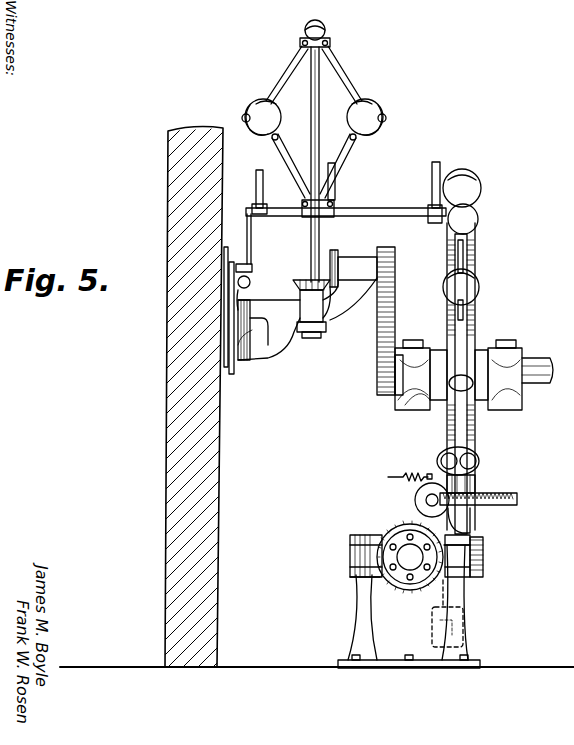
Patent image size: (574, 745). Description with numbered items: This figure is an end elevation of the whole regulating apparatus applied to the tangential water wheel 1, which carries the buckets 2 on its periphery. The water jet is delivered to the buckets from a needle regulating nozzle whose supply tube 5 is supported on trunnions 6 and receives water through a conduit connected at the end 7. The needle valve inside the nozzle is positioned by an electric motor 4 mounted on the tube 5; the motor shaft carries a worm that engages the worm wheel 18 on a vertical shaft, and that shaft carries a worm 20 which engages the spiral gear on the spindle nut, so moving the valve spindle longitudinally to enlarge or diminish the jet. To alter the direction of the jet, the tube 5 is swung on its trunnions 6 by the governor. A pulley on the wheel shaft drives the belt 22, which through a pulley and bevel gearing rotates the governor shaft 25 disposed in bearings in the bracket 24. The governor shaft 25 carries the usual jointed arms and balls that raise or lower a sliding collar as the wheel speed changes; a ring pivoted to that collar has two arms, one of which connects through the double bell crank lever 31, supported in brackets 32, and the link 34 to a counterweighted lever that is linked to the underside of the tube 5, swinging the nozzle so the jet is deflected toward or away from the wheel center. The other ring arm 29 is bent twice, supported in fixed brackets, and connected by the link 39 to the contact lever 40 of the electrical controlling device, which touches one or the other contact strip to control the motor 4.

The tangential water wheel 1 is at (476, 428).
The buckets 2 is at (479, 289).
The electric motor 4 is at (415, 501).
The supply tube 5 is at (392, 531).
The trunnions 6 is at (352, 550).
The tube end 7 is at (410, 557).
The worm wheel 18 is at (478, 488).
The worm 20 is at (484, 549).
The belt 22 is at (395, 297).
The bracket 24 is at (284, 323).
The governor shaft 25 is at (312, 140).
The ring arm 29 is at (293, 188).
The double bell crank lever 31 is at (346, 201).
The brackets 32 is at (432, 182).
The link 34 is at (447, 262).
The link 39 is at (251, 238).
The contact lever 40 is at (246, 292).